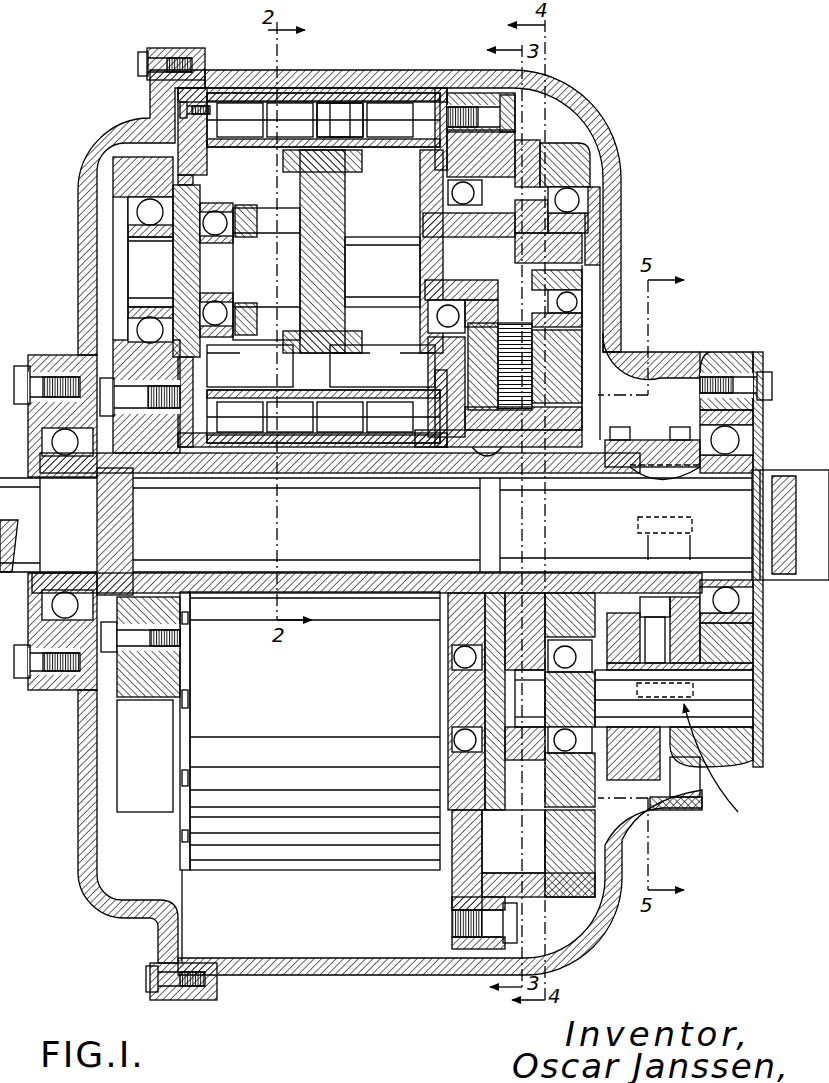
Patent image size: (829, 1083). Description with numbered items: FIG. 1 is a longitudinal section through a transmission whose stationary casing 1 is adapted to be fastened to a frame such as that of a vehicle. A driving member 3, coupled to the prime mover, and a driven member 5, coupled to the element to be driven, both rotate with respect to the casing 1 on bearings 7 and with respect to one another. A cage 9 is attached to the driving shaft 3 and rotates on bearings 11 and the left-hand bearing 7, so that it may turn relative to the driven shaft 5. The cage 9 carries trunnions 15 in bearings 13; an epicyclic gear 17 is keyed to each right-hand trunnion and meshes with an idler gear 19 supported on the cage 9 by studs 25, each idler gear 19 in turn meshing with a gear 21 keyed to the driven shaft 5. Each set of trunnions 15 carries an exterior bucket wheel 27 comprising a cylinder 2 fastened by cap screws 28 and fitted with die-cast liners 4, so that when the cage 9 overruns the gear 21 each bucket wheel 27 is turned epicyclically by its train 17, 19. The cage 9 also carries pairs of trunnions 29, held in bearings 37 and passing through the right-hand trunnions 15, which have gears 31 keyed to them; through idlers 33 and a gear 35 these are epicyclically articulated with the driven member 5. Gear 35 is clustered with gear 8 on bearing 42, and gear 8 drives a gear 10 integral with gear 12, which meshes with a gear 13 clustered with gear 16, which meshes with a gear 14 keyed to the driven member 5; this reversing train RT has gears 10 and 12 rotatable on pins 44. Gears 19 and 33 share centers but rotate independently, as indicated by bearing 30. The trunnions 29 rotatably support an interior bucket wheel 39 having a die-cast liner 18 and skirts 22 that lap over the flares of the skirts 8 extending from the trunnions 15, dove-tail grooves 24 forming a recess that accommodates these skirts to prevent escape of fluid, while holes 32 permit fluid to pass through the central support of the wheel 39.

The stationary casing 1 is at (618, 238).
The cylinder 2 is at (208, 92).
The driving member 3 is at (45, 560).
The die-cast liner 4 is at (290, 98).
The driven member 5 is at (762, 560).
The bearings 7 is at (55, 442).
The skirts 8 is at (648, 426).
The cage 9 is at (440, 643).
The gear 10 is at (648, 558).
The bearings 11 is at (198, 484).
The gear 12 is at (667, 560).
The bearings 13 is at (145, 212).
The gear 14 is at (690, 558).
The trunnions 15 is at (140, 270).
The gear 16 is at (722, 634).
The epicyclic gear 17 is at (500, 182).
The die-cast liner 18 is at (416, 363).
The idler gear 19 is at (523, 879).
The gear 21 is at (515, 550).
The skirts 22 is at (321, 363).
The dove-tail grooves 24 is at (347, 288).
The studs 25 is at (462, 702).
The vaned or bucket wheel 27 is at (365, 118).
The cap screws 28 is at (180, 110).
The trunnions 29 is at (598, 268).
The bearing 30 is at (348, 108).
The gears 31 is at (542, 172).
The holes 32 is at (335, 386).
The idlers 33 is at (558, 745).
The gear 35 is at (538, 470).
The bearings 37 is at (222, 232).
The interior vaned or bucket wheel 39 is at (223, 368).
The bearing 42 is at (612, 478).
The pins 44 is at (740, 704).
The reversing train RT is at (726, 763).